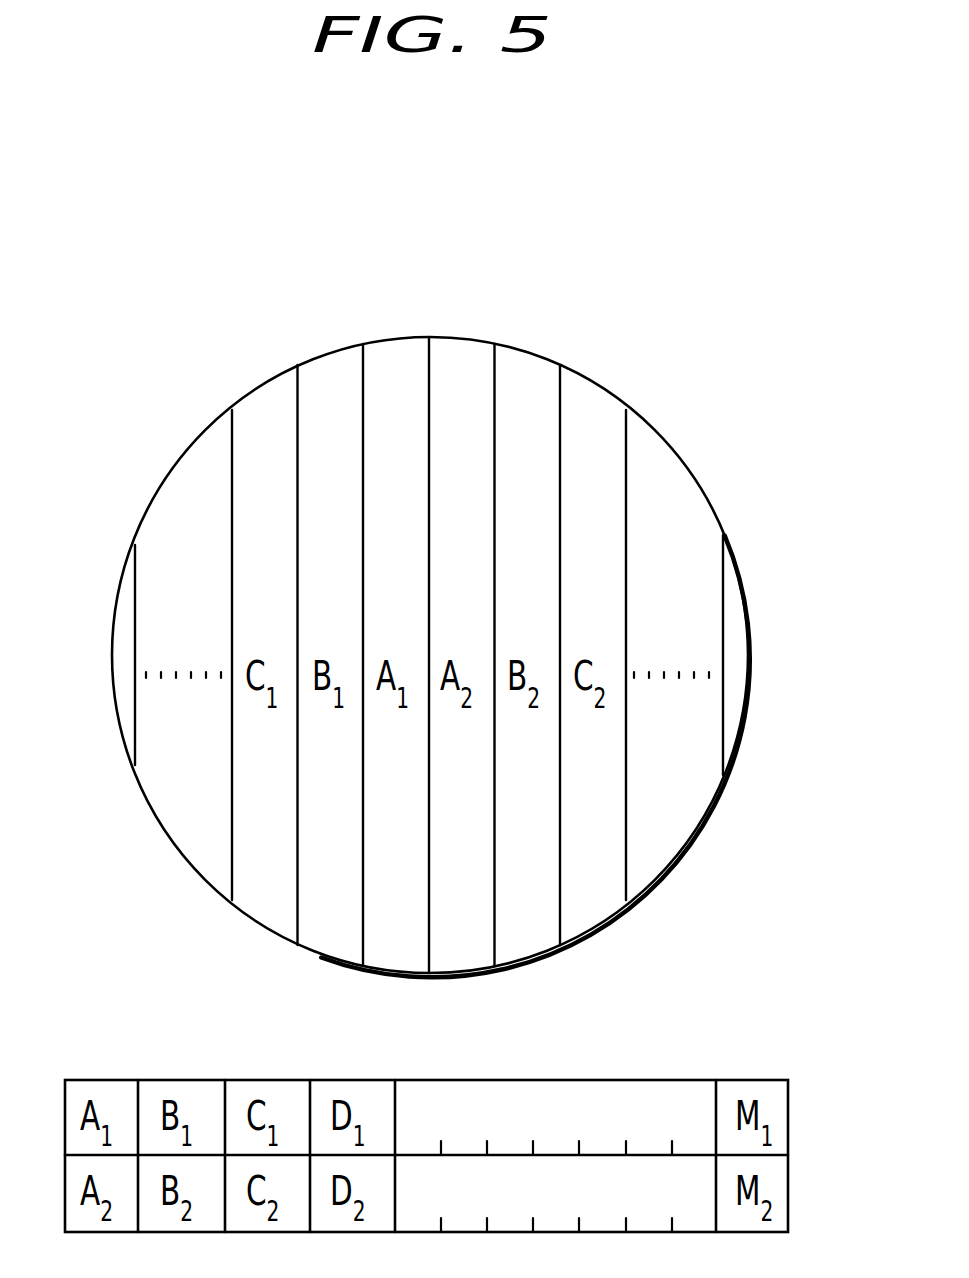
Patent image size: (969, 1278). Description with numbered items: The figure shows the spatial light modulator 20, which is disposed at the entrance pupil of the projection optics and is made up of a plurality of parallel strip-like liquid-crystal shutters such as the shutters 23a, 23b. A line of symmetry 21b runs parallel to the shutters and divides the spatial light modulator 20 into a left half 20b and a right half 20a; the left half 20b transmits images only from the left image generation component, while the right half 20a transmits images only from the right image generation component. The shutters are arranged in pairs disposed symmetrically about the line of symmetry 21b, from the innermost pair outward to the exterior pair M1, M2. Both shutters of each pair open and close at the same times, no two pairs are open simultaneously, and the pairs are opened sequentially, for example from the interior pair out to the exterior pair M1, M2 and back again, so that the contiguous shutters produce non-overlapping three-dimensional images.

The spatial light modulator 20 is at (722, 535).
The right half of the spatial light modulator 20a is at (693, 632).
The left half of the spatial light modulator 20b is at (165, 638).
The line of symmetry 21b is at (430, 368).
The strip-like liquid-crystal shutter 23a is at (465, 383).
The strip-like liquid-crystal shutter 23b is at (400, 366).
The exterior strip-like shutter M1 is at (125, 688).
The exterior strip-like shutter M2 is at (730, 684).